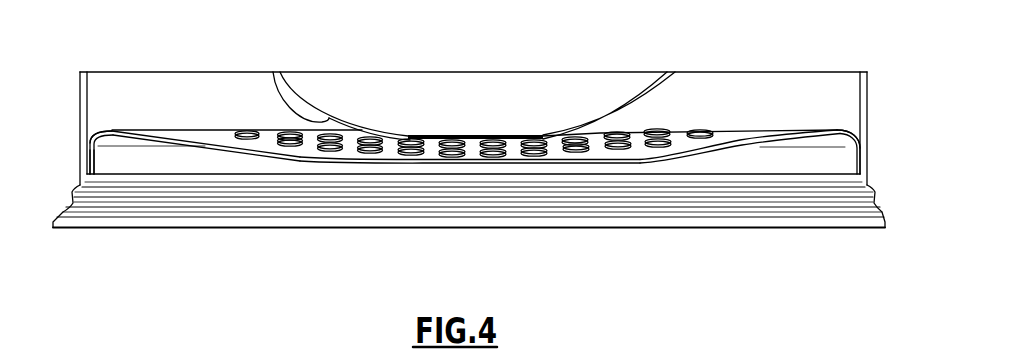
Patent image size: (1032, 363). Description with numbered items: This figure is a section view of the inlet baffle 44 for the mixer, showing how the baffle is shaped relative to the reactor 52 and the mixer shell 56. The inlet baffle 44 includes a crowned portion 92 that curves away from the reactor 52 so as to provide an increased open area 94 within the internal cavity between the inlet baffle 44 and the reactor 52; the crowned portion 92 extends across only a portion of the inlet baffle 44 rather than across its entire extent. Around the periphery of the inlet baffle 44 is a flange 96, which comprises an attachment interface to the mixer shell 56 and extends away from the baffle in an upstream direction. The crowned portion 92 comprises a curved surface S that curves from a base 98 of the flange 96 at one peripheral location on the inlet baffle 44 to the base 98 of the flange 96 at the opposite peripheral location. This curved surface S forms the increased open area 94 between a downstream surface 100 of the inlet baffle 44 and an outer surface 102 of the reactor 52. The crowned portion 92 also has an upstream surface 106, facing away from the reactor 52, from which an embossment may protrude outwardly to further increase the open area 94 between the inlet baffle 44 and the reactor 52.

The inlet baffle 44 is at (738, 137).
The reactor 52 is at (612, 97).
The mixer shell 56 is at (870, 123).
The crowned portion 92 is at (270, 134).
The open area 94 is at (640, 122).
The flange 96 is at (90, 163).
The base of the flange 98 is at (105, 130).
The downstream surface 100 is at (210, 134).
The outer surface 102 is at (275, 77).
The upstream surface 106 is at (780, 141).
The curved surface S is at (280, 163).